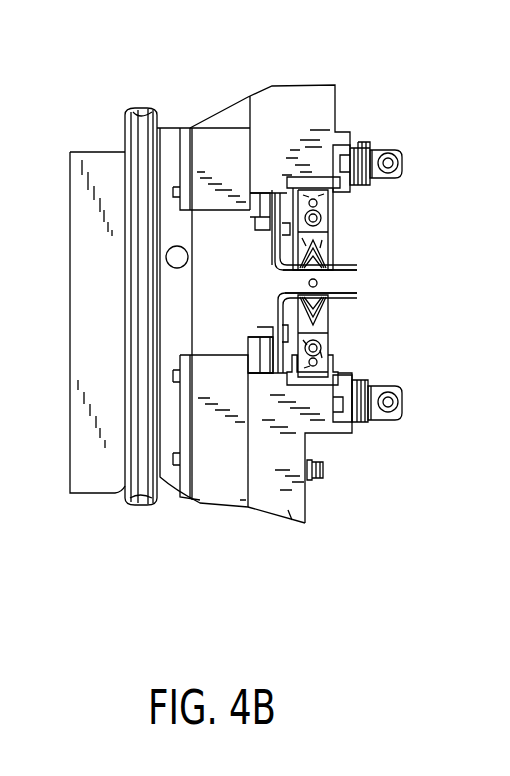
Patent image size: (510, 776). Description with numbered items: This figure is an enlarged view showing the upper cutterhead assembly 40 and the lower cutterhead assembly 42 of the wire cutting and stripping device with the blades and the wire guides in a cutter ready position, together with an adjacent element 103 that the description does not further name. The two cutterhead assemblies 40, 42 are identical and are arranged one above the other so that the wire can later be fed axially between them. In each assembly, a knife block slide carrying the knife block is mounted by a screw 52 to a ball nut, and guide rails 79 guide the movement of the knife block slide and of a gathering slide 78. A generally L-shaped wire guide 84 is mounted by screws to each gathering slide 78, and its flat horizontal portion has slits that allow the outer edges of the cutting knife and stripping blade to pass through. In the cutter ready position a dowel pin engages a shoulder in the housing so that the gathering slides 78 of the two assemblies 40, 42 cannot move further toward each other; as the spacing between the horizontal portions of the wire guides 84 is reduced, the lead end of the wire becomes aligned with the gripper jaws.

The glass panel 103 is at (137, 146).
The first upper cutterhead assembly 40 is at (291, 122).
The second lower cutterhead assembly 42 is at (324, 478).
The screw 52 is at (323, 468).
The gathering slide 78 is at (272, 330).
The guide rails 79 is at (257, 373).
The wire guide 84 is at (348, 267).